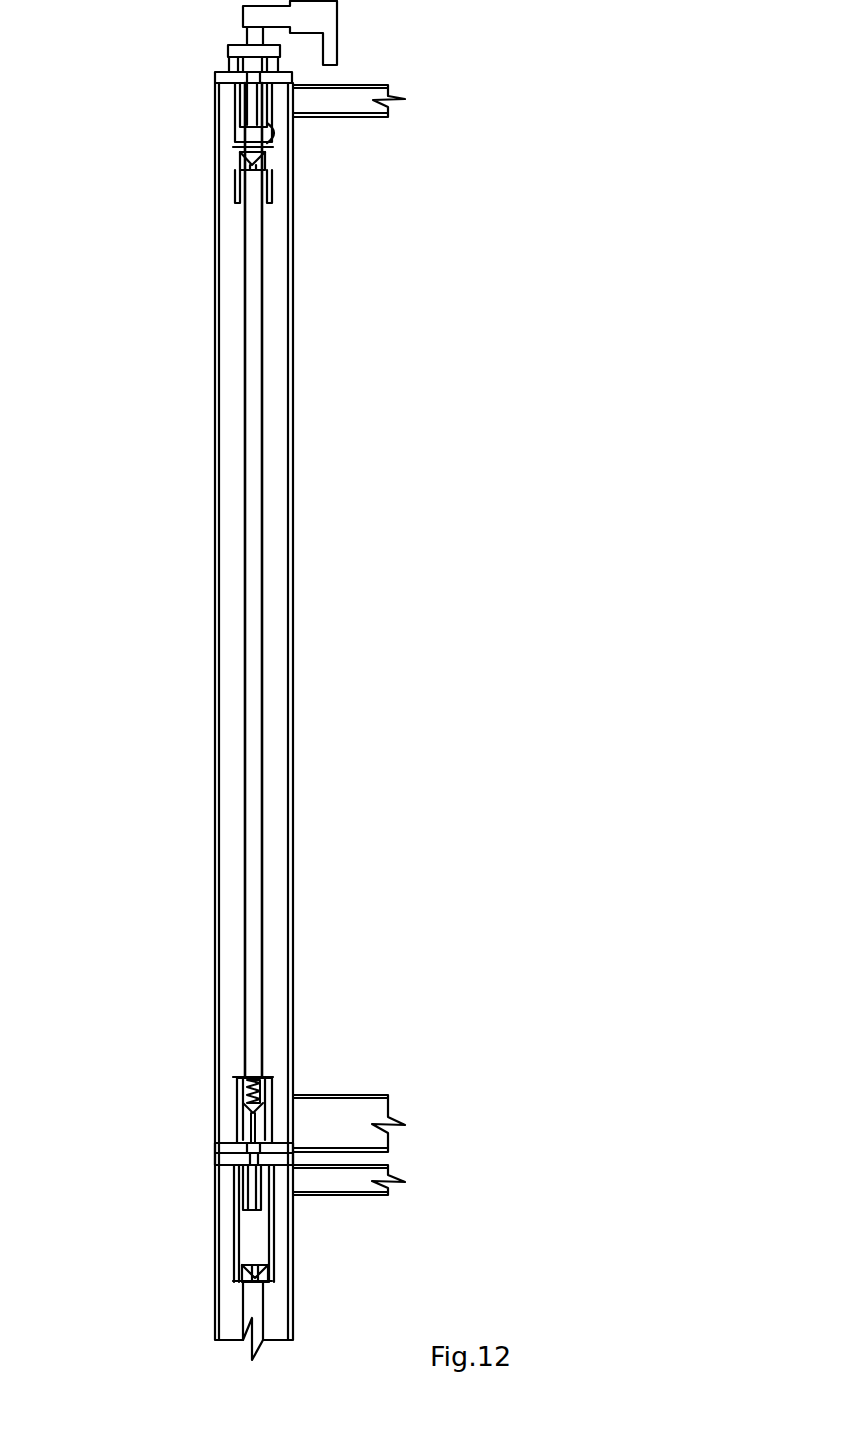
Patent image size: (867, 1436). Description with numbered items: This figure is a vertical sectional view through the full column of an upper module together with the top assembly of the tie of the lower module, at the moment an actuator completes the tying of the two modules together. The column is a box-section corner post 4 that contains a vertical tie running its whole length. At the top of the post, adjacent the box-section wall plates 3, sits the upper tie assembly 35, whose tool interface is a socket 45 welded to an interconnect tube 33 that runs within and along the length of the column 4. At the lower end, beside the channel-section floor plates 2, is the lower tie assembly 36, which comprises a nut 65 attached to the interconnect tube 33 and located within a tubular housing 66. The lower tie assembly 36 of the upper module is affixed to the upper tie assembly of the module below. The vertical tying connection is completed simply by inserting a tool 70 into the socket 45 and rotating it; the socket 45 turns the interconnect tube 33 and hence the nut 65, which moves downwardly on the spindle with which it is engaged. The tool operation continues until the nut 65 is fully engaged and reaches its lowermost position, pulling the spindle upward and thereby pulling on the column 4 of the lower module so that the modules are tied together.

The channel-section floor plate 2 is at (374, 1094).
The box-section wall plate 3 is at (348, 116).
The box-section corner post 4 is at (116, 381).
The interconnect tube 33 is at (262, 847).
The upper tie assembly 35 is at (224, 118).
The lower tie assembly 36 is at (225, 1120).
The socket 45 is at (270, 161).
The nut 65 is at (258, 1077).
The tubular housing 66 is at (237, 1133).
The tool 70 is at (352, 33).